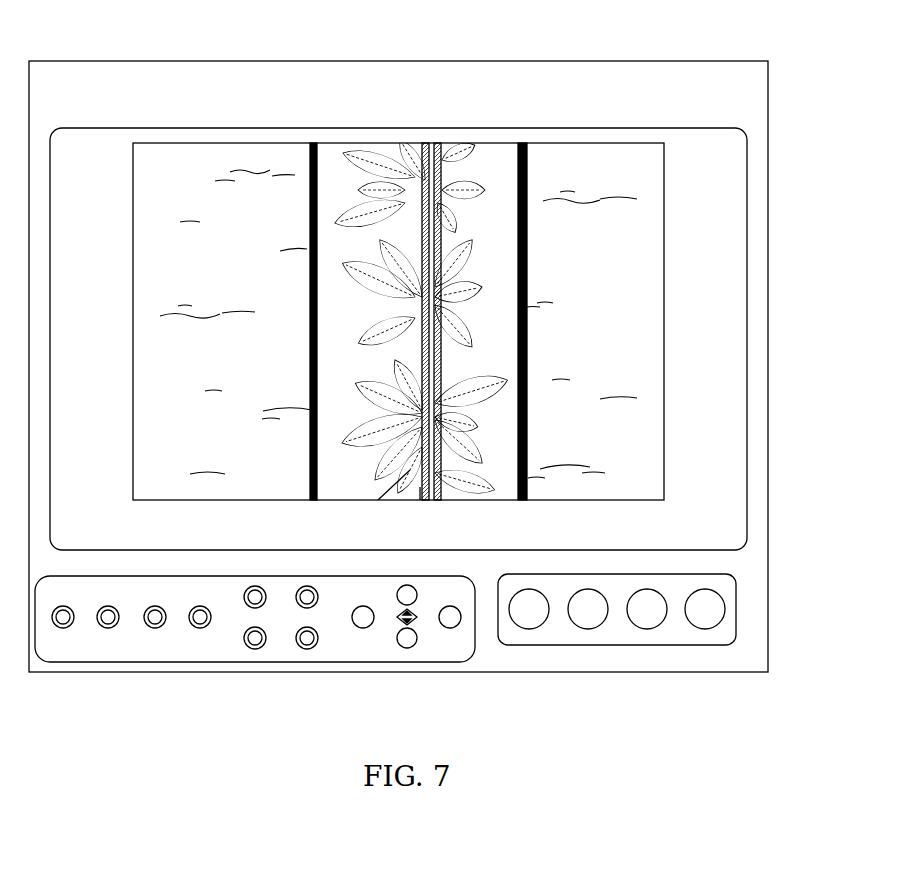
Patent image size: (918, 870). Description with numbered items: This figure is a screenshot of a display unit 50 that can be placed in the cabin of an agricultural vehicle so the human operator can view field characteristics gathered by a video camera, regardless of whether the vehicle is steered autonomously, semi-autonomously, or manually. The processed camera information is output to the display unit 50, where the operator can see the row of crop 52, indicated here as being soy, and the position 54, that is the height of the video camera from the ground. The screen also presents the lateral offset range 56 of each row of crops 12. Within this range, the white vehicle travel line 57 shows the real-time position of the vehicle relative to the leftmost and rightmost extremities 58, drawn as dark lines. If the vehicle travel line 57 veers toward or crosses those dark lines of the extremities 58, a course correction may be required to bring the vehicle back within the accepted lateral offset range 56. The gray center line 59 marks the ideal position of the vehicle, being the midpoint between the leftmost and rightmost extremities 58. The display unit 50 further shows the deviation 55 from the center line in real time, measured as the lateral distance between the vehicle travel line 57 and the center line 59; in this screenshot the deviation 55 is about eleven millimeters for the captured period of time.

The display unit 50 is at (66, 77).
The row of crop 52 is at (712, 526).
The position of the video camera 54 is at (100, 532).
The deviation 55 is at (462, 530).
The lateral offset range 56 is at (492, 158).
The vehicle travel line 57 is at (440, 185).
The leftmost and rightmost extremities 58 is at (314, 166).
The center line 59 is at (420, 488).
The row of crops 12 is at (384, 185).